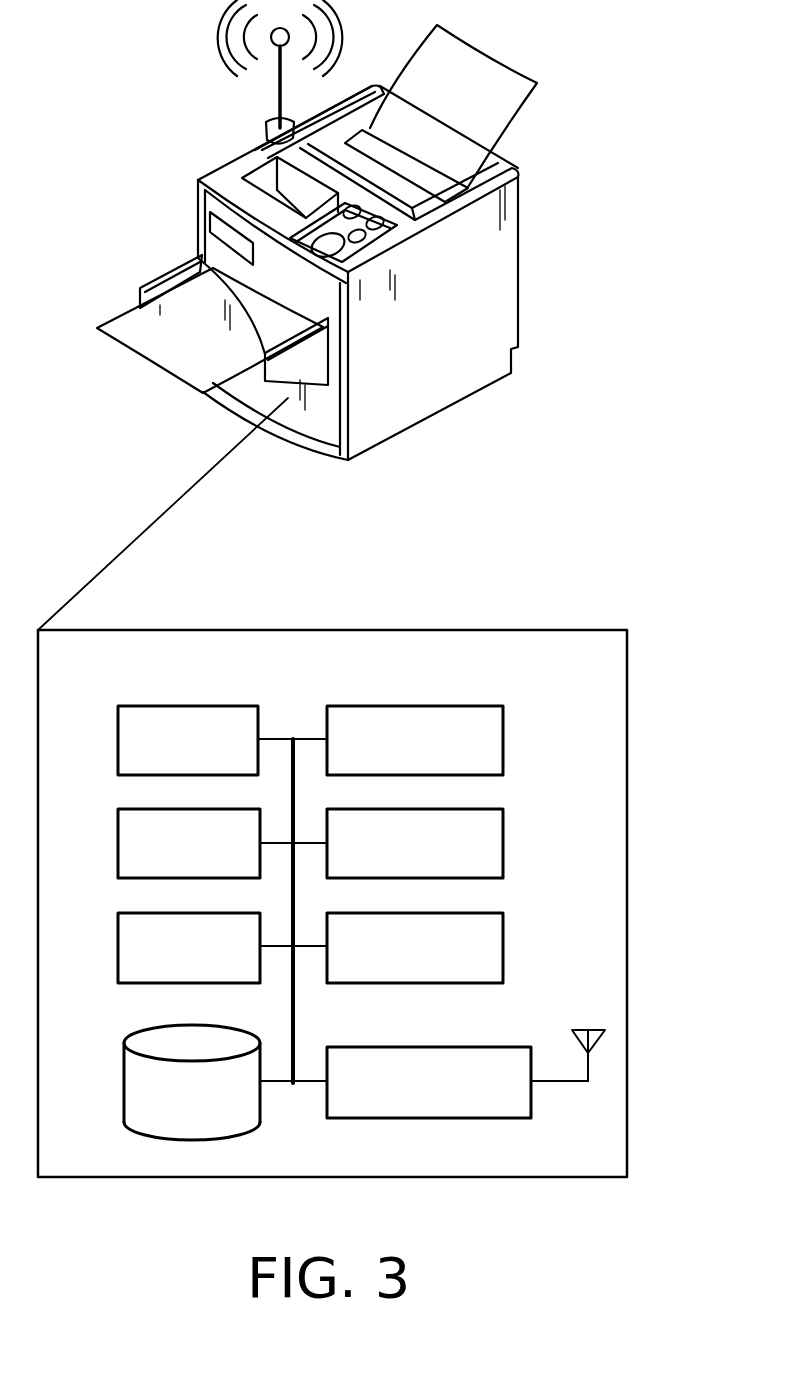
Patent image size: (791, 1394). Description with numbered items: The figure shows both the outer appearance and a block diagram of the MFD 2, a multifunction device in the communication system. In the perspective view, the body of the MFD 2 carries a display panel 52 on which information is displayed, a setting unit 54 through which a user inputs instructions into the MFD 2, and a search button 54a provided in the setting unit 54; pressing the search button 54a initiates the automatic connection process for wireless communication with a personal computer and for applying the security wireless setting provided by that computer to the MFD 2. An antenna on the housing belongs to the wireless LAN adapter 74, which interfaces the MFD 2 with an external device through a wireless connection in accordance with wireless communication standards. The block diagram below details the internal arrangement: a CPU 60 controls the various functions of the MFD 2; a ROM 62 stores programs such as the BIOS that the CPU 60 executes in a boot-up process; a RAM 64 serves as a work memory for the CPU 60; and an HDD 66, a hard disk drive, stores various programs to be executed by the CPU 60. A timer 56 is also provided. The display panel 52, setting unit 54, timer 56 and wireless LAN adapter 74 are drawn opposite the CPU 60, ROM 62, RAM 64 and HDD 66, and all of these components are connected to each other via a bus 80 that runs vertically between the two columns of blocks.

The MFD 2 is at (598, 122).
The wireless LAN adapter 74 is at (270, 124).
The display panel 52 is at (260, 164).
The setting unit 54 is at (342, 248).
The search button 54a is at (392, 228).
The timer 56 is at (504, 738).
The CPU 60 is at (118, 744).
The ROM 62 is at (118, 846).
The RAM 64 is at (118, 950).
The HDD 66 is at (124, 1105).
The bus 80 is at (295, 762).